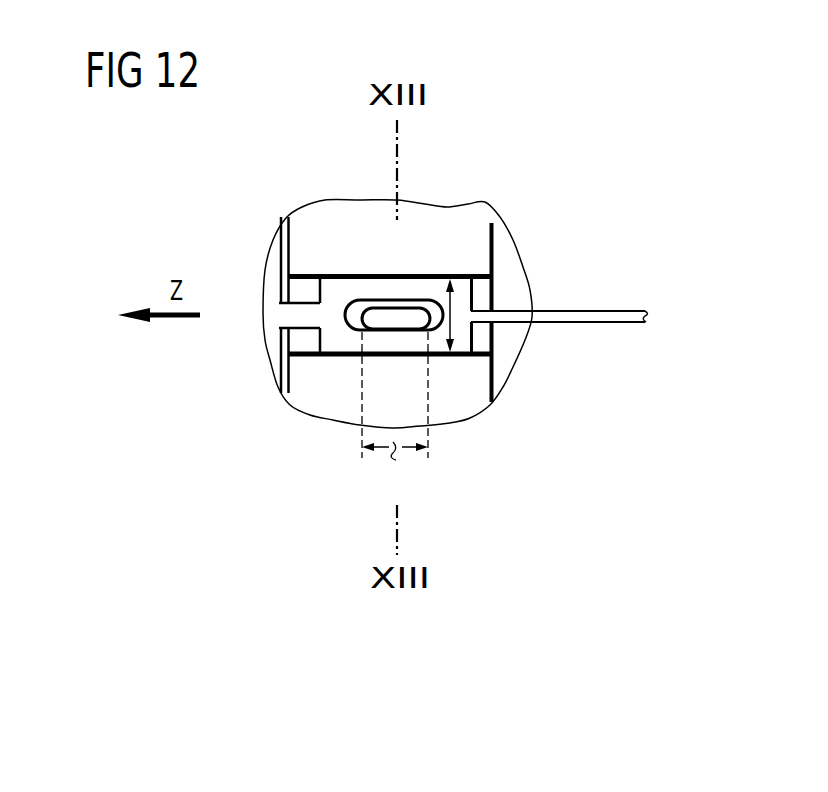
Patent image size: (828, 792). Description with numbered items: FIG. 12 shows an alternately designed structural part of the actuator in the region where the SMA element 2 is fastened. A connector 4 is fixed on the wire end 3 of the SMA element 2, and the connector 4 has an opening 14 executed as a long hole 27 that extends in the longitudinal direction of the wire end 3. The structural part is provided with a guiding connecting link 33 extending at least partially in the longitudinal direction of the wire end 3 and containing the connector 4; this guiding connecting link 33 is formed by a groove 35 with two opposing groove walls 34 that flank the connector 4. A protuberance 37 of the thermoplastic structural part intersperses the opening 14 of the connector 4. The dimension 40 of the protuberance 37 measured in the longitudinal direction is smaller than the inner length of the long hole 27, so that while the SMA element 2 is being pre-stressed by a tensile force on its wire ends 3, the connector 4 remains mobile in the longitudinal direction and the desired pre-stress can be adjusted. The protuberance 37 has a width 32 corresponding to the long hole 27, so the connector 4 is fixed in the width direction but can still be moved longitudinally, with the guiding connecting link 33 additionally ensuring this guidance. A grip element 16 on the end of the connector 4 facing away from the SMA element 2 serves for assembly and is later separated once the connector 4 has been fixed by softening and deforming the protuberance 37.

The SMA element 2 is at (628, 292).
The wire end 3 is at (581, 317).
The connector 4 is at (326, 331).
The opening 14 is at (403, 305).
The long hole 27 is at (376, 398).
The grip element 16 is at (278, 315).
The width 32 is at (450, 311).
The guiding connecting link 33 is at (463, 342).
The groove walls 34 is at (378, 274).
The groove 35 is at (347, 283).
The protuberance 37 is at (397, 331).
The dimension 40 is at (395, 416).